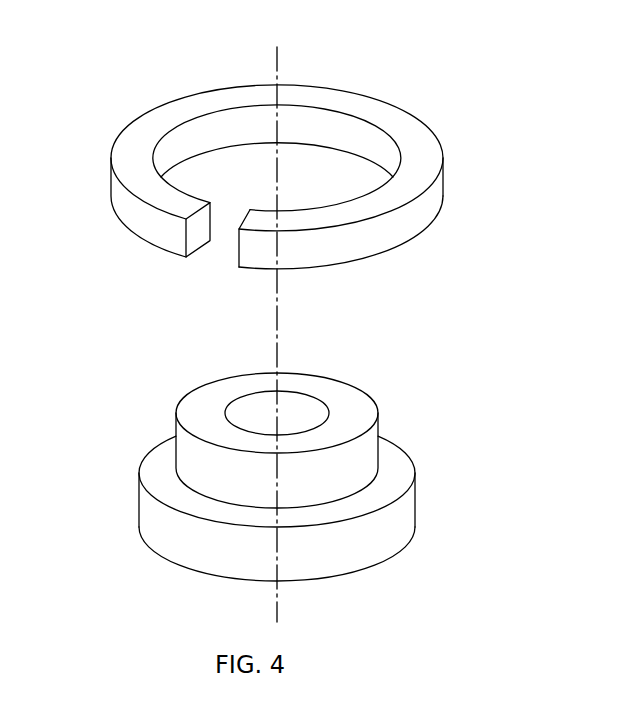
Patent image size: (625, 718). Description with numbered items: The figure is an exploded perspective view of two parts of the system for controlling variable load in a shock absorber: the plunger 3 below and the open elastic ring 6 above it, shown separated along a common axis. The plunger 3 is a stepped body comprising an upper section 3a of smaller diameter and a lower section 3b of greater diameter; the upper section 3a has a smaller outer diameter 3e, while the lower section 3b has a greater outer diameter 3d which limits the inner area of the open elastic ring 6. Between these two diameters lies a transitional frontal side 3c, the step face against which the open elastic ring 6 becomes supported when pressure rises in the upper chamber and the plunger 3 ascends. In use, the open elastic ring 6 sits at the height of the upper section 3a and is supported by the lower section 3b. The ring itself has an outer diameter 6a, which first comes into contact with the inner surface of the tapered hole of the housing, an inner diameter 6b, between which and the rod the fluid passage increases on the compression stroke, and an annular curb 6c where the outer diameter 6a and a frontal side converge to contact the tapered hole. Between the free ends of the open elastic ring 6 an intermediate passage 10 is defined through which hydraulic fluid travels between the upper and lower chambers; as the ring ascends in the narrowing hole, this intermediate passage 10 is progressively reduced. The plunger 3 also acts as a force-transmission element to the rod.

The open elastic ring 6 is at (321, 188).
The outer diameter 6a is at (383, 232).
The inner diameter 6b is at (352, 135).
The annular curb 6c is at (418, 197).
The intermediate passage 10 is at (207, 264).
The plunger 3 is at (292, 486).
The upper section 3a is at (378, 391).
The lower section 3b is at (177, 567).
The transitional frontal side 3c is at (387, 485).
The greater outer diameter 3d is at (382, 528).
The smaller outer diameter 3e is at (200, 458).